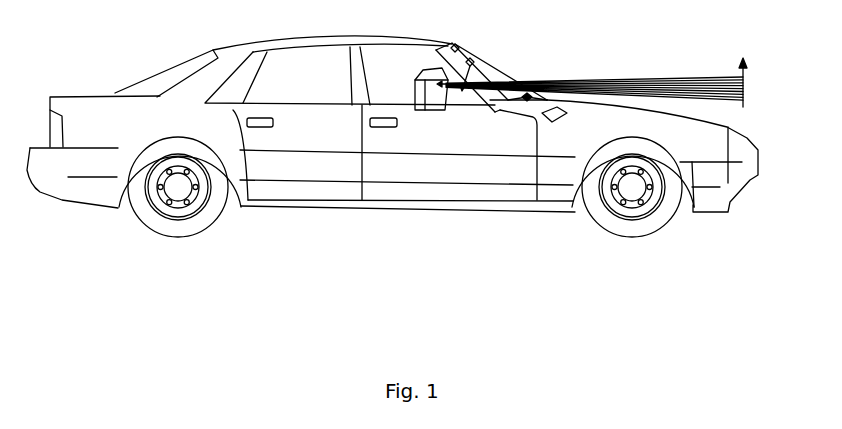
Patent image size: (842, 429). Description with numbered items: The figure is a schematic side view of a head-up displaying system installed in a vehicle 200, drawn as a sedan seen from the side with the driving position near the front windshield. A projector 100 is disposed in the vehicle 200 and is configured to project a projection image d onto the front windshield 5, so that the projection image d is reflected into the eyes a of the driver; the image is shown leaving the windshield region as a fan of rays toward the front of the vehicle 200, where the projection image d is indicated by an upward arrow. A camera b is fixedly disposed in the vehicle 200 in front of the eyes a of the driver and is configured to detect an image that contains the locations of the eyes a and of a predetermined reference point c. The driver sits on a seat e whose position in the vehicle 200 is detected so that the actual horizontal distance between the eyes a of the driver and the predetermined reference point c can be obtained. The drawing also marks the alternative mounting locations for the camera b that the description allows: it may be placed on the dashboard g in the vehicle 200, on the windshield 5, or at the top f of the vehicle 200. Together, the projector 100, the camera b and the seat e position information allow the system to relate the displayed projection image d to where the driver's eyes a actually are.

The vehicle 200 is at (122, 110).
The projector 100 is at (543, 80).
The windshield 5 is at (492, 66).
The eyes of the driver a is at (413, 90).
The camera b is at (472, 60).
The predetermined reference point c is at (512, 77).
The projection image d is at (752, 80).
The seat of the driver e is at (417, 77).
The top of the vehicle f is at (453, 46).
The dashboard g is at (508, 113).